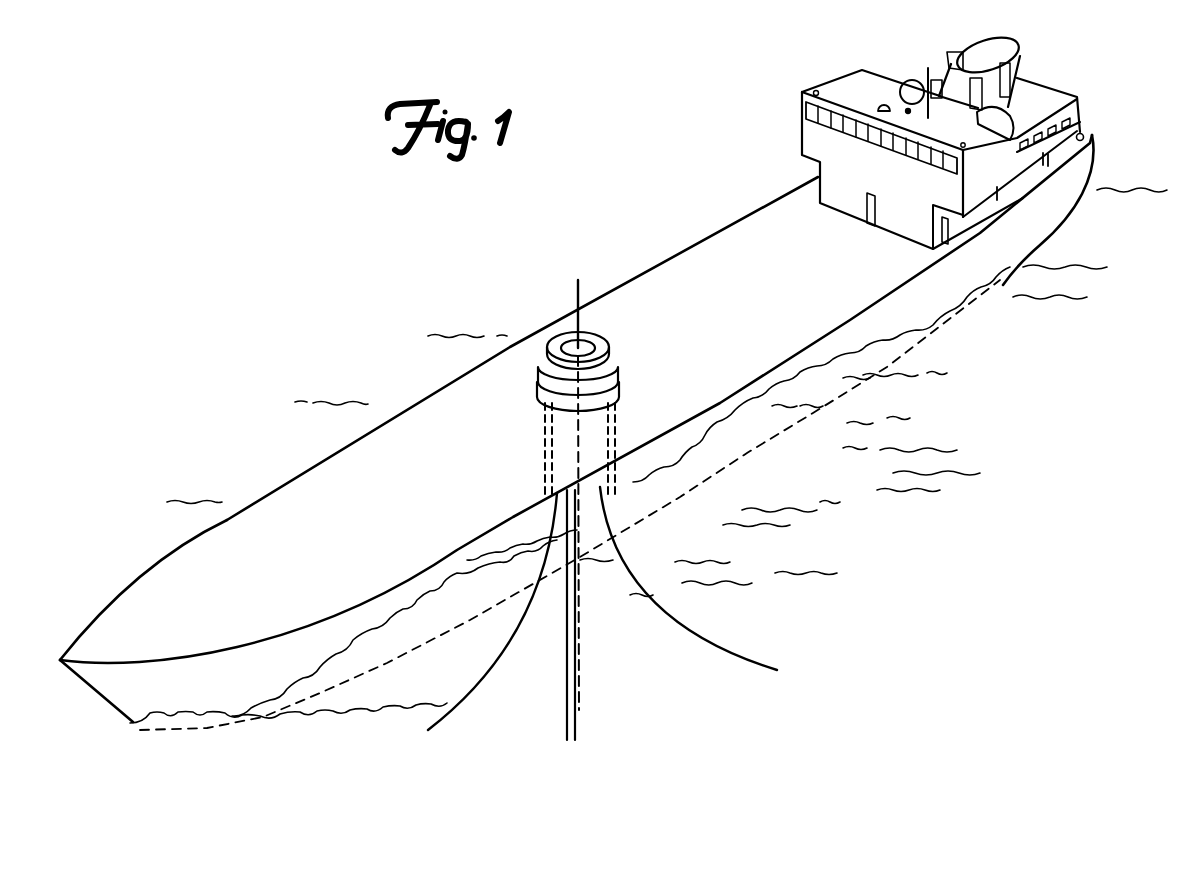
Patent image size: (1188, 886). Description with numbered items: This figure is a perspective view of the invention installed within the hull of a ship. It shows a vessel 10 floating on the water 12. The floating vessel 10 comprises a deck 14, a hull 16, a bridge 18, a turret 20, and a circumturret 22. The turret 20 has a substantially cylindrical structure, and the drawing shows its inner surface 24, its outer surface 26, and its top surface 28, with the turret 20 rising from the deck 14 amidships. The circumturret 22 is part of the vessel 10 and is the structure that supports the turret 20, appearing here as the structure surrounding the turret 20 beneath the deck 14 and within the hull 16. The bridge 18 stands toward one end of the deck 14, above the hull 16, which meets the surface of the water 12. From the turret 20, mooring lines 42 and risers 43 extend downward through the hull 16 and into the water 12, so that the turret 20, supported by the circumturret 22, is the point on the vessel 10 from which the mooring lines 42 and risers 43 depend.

The vessel 10 is at (800, 290).
The water 12 is at (967, 393).
The deck 14 is at (353, 470).
The hull 16 is at (1030, 223).
The bridge 18 is at (1053, 102).
The turret 20 is at (603, 414).
The circumturret 22 is at (616, 417).
The inner surface 24 is at (567, 346).
The outer surface 26 is at (597, 367).
The top surface 28 is at (593, 332).
The mooring lines 42 is at (707, 634).
The risers 43 is at (582, 697).